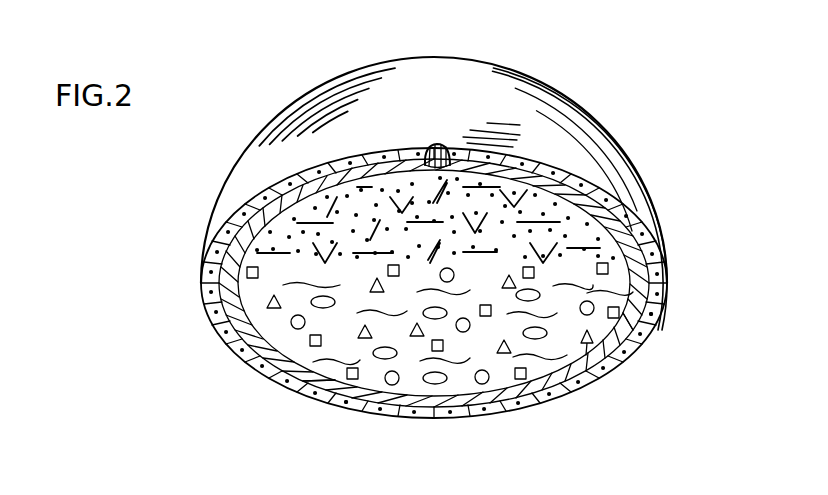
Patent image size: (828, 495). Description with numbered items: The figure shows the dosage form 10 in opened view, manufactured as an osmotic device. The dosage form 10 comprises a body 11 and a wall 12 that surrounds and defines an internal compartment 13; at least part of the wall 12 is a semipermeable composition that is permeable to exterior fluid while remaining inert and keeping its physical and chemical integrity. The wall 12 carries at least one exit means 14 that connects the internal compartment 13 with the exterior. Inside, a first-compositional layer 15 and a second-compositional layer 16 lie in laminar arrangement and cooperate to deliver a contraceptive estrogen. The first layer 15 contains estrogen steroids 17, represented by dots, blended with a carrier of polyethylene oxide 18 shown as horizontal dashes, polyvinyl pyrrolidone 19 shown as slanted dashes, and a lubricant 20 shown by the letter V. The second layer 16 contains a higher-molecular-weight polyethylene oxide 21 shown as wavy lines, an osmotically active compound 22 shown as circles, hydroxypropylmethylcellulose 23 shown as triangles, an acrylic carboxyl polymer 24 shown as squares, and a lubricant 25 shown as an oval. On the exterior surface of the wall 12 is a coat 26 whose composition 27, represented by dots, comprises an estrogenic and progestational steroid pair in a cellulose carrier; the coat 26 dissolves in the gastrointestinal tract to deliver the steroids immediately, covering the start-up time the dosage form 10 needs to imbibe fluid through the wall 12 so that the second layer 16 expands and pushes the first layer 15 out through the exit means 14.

The dosage form 10 is at (678, 120).
The body 11 is at (660, 197).
The wall 12 is at (665, 250).
The internal compartment 13 is at (637, 273).
The exit means 14 is at (440, 146).
The first-compositional layer 15 is at (253, 227).
The second-compositional layer 16 is at (288, 340).
The estrogen steroids 17 is at (222, 247).
The polyethylene oxide 18 is at (637, 193).
The polyvinyl pyrrolidone 19 is at (327, 207).
The lubricant 20 is at (515, 192).
The polyethylene oxide 21 is at (657, 313).
The osmotically active compound 22 is at (637, 343).
The hydroxypropylmethylcellulose 23 is at (592, 314).
The acrylic carboxyl polymer 24 is at (521, 379).
The lubricant 25 is at (431, 380).
The coat 26 is at (317, 392).
The composition 27 is at (355, 404).